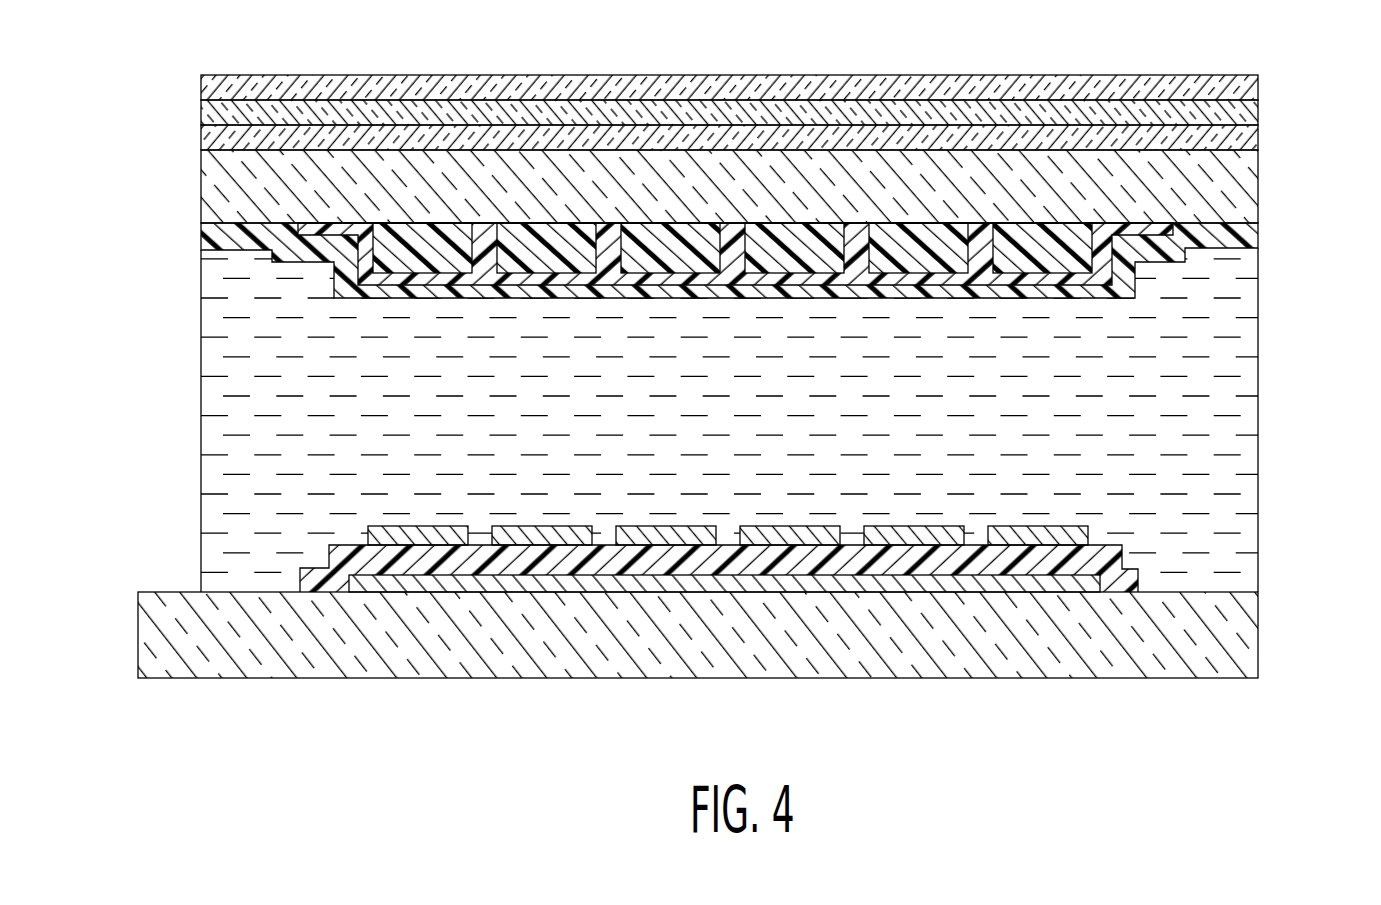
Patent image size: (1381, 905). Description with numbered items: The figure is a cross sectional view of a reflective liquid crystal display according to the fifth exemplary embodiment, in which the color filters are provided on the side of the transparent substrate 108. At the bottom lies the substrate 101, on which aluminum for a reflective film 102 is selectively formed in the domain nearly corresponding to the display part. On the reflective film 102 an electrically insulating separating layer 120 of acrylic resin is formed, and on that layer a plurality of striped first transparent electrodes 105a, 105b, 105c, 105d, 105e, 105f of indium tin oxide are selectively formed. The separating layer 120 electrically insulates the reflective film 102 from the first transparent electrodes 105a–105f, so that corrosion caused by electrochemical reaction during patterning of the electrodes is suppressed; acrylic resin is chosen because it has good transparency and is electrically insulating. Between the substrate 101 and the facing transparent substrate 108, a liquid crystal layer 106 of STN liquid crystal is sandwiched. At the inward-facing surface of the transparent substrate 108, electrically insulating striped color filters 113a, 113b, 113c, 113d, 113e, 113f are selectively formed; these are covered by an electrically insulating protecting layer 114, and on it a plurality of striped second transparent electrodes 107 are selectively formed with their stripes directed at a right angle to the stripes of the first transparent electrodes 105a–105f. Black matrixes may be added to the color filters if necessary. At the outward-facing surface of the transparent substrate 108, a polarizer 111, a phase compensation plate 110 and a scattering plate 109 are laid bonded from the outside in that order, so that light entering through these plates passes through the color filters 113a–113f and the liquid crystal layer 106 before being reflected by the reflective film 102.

The substrate 101 is at (1247, 642).
The reflective film 102 is at (1067, 595).
The first transparent electrode 105a is at (432, 545).
The first transparent electrode 105b is at (545, 545).
The first transparent electrode 105c is at (672, 545).
The first transparent electrode 105d is at (800, 543).
The first transparent electrode 105e is at (930, 545).
The first transparent electrode 105f is at (1018, 545).
The liquid crystal layer 106 is at (1240, 395).
The second transparent electrode 107 is at (1258, 238).
The transparent substrate 108 is at (1258, 185).
The scattering plate 109 is at (1258, 132).
The phase compensation plate 110 is at (1258, 105).
The polarizer 111 is at (1258, 80).
The color filter 113a is at (423, 242).
The color filter 113b is at (567, 242).
The color filter 113c is at (678, 242).
The color filter 113d is at (800, 242).
The color filter 113e is at (927, 242).
The color filter 113f is at (1042, 242).
The protecting layer 114 is at (1130, 224).
The separating layer 120 is at (1123, 582).